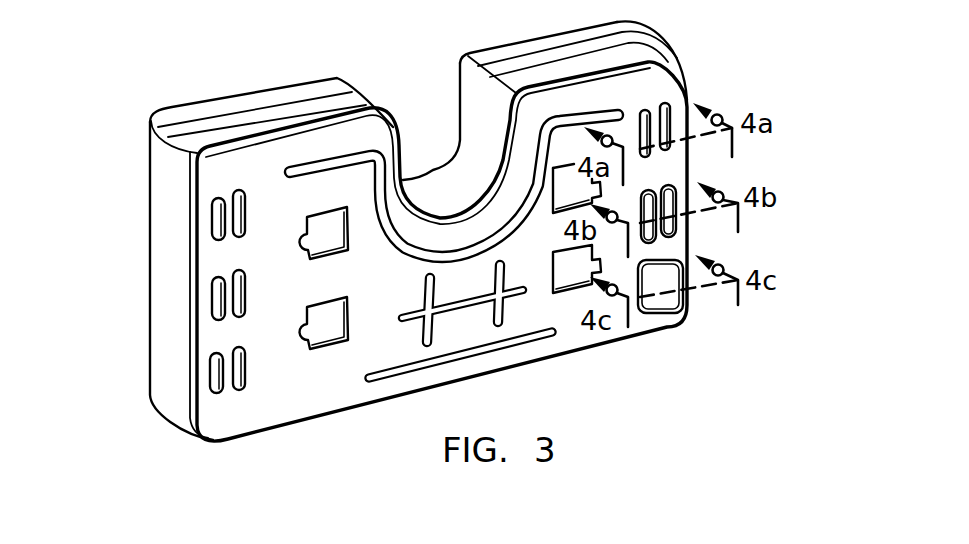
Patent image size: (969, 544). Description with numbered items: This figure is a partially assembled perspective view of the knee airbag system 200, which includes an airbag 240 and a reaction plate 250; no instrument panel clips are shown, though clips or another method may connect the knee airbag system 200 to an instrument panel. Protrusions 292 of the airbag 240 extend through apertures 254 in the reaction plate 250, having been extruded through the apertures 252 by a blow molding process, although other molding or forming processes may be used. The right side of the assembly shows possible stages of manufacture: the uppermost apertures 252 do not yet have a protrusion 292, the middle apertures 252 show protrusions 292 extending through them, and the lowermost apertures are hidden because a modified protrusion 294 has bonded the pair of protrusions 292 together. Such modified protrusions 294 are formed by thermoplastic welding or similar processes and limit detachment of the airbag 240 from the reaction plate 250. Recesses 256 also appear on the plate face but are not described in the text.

The knee airbag system 200 is at (273, 72).
The airbag 240 is at (663, 33).
The reaction plate 250 is at (692, 72).
The apertures 252 is at (240, 238).
The apertures 254 is at (230, 206).
The recess 256 is at (333, 340).
The protrusions 292 is at (660, 228).
The modified protrusion 294 is at (663, 303).